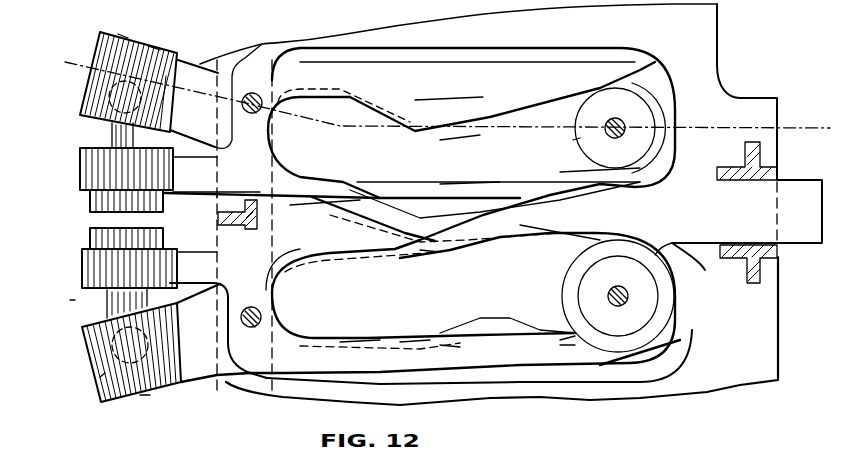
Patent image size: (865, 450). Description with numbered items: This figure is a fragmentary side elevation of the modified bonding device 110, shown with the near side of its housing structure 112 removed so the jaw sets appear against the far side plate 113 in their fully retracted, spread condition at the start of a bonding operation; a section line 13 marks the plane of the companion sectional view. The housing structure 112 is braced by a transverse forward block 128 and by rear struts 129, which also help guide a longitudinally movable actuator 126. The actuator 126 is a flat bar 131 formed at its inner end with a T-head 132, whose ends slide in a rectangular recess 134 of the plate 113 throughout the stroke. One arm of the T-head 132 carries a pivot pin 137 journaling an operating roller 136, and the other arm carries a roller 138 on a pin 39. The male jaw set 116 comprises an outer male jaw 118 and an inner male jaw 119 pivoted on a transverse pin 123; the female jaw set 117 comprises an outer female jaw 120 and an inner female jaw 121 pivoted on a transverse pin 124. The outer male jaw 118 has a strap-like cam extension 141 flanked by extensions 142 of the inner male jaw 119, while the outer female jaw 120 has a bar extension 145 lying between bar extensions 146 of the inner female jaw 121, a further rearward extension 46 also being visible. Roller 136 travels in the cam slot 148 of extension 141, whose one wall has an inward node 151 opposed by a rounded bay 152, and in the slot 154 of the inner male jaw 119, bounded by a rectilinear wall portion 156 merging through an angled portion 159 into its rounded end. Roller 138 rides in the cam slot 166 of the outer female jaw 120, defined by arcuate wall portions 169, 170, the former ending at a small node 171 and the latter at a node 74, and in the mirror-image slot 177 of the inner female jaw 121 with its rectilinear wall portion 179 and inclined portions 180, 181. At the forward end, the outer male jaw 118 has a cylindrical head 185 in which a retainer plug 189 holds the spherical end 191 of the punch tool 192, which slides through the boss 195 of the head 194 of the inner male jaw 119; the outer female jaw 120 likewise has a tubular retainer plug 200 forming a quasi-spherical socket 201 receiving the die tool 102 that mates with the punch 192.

The section line 13- 13 is at (65, 60).
The screw 39 is at (632, 276).
The arm 46 is at (218, 330).
The spring 74 is at (507, 316).
The neck 102 is at (112, 322).
The modified embodiment of the bonding device 110 is at (257, 405).
The housing structure 112 is at (368, 38).
The side plate 113 is at (533, 400).
The male jaw set 116 is at (67, 151).
The female jaw set 117 is at (66, 309).
The outer male jaw 118 is at (78, 110).
The inner male jaw 119 is at (77, 193).
The outer female jaw 120 is at (79, 353).
The inner female jaw 121 is at (80, 270).
The transverse pivot pin 123 is at (254, 93).
The transverse pivot pin 124 is at (263, 310).
The longitudinally movable actuator 126 is at (713, 233).
The transverse forward block 128 is at (218, 225).
The rear block or strut 129 is at (722, 166).
The flat bar 131 is at (803, 186).
The T-head 132 is at (640, 357).
The internal recess 134 is at (542, 50).
The operating roller 136 is at (573, 140).
The transverse pivot pin 137 is at (625, 118).
The roller 138 is at (580, 275).
The cam extension 141 is at (228, 72).
The extension 142 is at (272, 137).
The bar extension 145 is at (210, 366).
The bar extension 146 is at (567, 357).
The cam slot 148 is at (490, 113).
The inward projection or node 151 is at (460, 144).
The rounded bay or recess 152 is at (417, 190).
The slot 154 is at (452, 183).
The rectilinear wall portion 156 is at (373, 180).
The mildly angled wall portion 159 is at (583, 170).
The cam slot 166 is at (351, 327).
The arcuate wall portion 169 is at (400, 262).
The arcuate wall portion 170 is at (460, 347).
The inner node 171 is at (433, 262).
The cam slot 177 is at (428, 338).
The rectilinear wall portion 179 is at (400, 335).
The mildly inclined portion 180 is at (596, 246).
The mildly inclined portion 181 is at (560, 340).
The cylindrical head 185 is at (173, 55).
The retainer plug 189 is at (150, 45).
The spherical end 191 is at (120, 33).
The male pierce or punch tool 192 is at (140, 143).
The head 194 is at (216, 212).
The reduced cylindrical boss 195 is at (87, 225).
The tubular retainer plug 200 is at (147, 397).
The quasi-spherical socket 201 is at (100, 377).